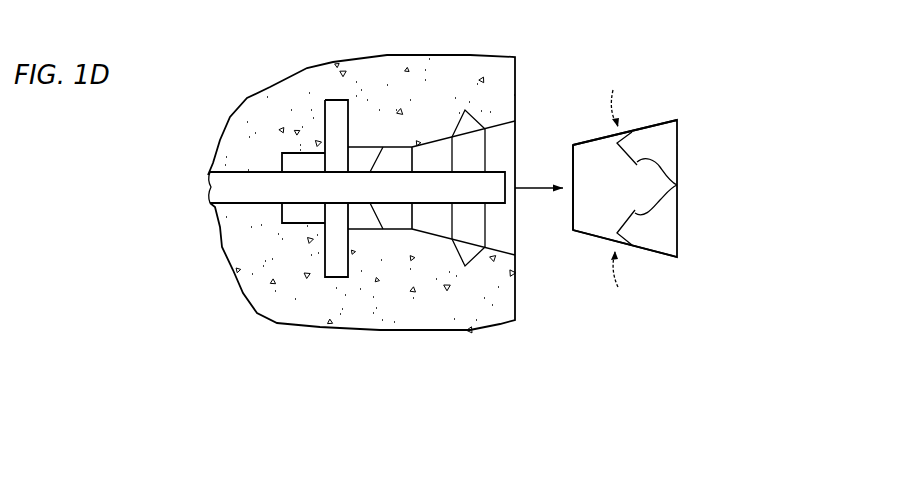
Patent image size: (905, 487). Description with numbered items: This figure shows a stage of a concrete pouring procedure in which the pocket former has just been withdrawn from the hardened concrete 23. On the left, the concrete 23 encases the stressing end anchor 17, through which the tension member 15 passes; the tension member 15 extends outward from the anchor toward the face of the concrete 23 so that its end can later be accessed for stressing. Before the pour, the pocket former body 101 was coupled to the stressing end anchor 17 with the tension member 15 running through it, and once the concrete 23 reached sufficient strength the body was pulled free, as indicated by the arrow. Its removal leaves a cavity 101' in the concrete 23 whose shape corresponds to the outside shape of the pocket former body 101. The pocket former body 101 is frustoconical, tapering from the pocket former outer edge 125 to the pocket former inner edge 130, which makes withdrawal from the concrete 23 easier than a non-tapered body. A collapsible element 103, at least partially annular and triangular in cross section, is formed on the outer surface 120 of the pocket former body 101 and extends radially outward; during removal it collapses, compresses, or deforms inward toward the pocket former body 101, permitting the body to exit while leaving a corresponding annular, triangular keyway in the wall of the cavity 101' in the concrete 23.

The tension member 15 is at (210, 188).
The stressing end anchor 17 is at (295, 150).
The concrete 23 is at (478, 77).
The pocket former body 101 is at (668, 172).
The cavity 101' is at (478, 222).
The collapsible element 103 is at (677, 185).
The outer surface 120 is at (661, 121).
The pocket former outer edge 125 is at (678, 218).
The pocket former inner edge 130 is at (573, 173).